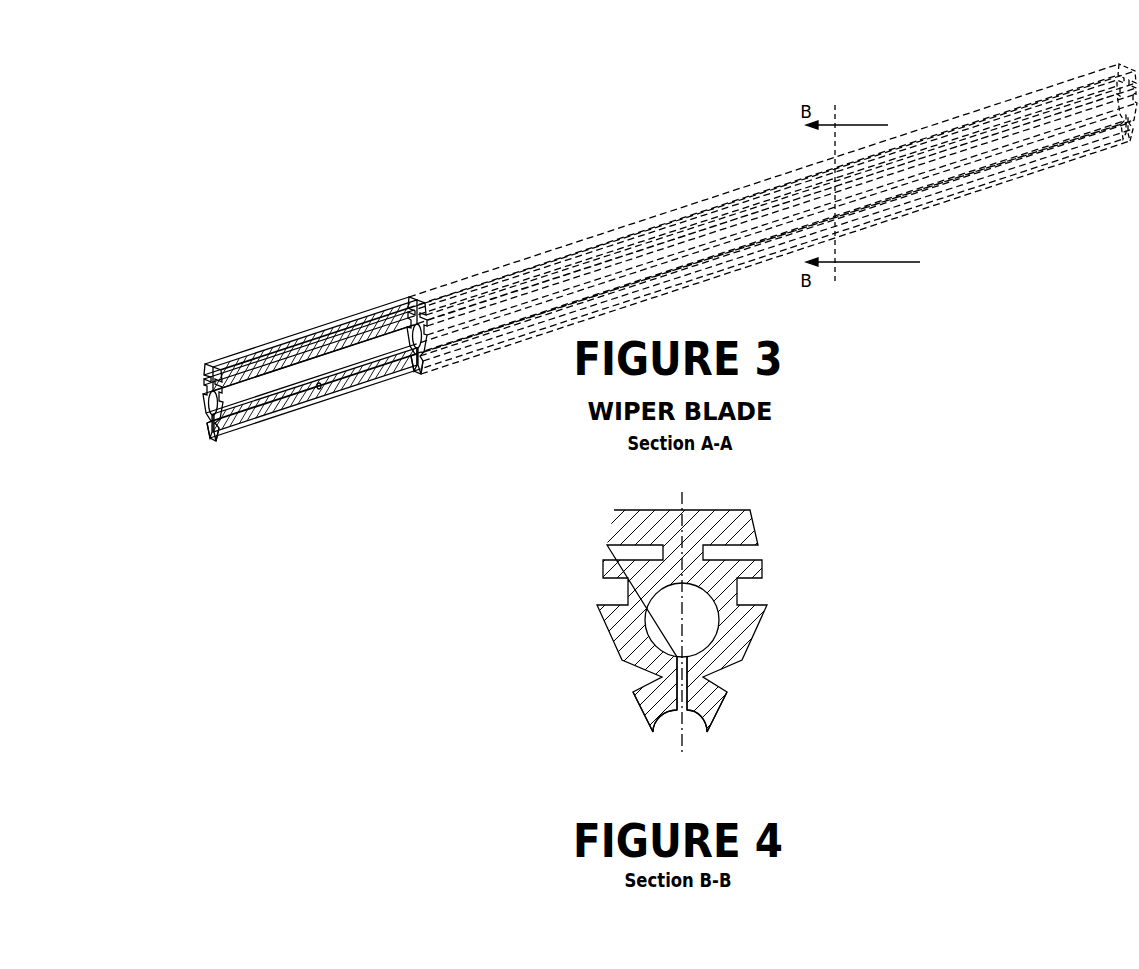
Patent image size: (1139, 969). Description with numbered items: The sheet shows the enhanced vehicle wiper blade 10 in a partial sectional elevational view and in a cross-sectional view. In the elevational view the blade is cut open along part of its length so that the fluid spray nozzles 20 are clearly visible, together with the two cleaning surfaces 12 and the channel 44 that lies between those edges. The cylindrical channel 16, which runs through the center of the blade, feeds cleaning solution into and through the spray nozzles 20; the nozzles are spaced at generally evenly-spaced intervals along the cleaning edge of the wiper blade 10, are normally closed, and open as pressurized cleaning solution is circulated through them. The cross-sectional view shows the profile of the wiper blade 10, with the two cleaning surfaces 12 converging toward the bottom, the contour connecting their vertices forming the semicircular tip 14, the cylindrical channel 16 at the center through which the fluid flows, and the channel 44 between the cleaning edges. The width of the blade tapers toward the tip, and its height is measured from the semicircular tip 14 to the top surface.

In FIG. 3, the wiper blade 10 is at (175, 383).
In FIG. 4, the wiper blade 10 is at (584, 552).
In FIG. 3, the cleaning surface 12 is at (422, 398).
In FIG. 4, the cleaning surface 12 is at (768, 710).
In FIG. 4, the semicircular tip 14 is at (668, 724).
In FIG. 3, the cylindrical channel 16 is at (226, 402).
In FIG. 4, the cylindrical channel 16 is at (597, 617).
In FIG. 3, the fluid spray nozzle 20 is at (320, 388).
In FIG. 4, the channel 44 is at (688, 716).